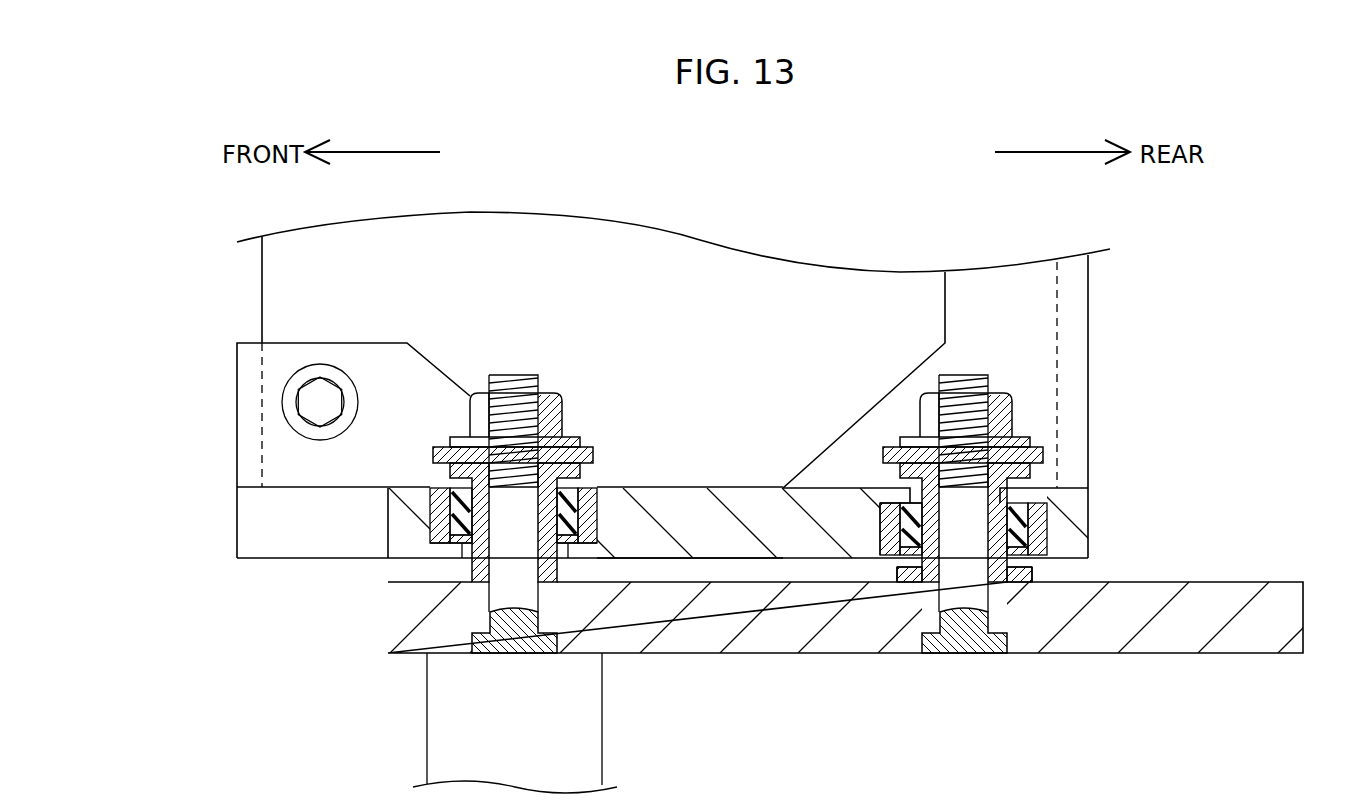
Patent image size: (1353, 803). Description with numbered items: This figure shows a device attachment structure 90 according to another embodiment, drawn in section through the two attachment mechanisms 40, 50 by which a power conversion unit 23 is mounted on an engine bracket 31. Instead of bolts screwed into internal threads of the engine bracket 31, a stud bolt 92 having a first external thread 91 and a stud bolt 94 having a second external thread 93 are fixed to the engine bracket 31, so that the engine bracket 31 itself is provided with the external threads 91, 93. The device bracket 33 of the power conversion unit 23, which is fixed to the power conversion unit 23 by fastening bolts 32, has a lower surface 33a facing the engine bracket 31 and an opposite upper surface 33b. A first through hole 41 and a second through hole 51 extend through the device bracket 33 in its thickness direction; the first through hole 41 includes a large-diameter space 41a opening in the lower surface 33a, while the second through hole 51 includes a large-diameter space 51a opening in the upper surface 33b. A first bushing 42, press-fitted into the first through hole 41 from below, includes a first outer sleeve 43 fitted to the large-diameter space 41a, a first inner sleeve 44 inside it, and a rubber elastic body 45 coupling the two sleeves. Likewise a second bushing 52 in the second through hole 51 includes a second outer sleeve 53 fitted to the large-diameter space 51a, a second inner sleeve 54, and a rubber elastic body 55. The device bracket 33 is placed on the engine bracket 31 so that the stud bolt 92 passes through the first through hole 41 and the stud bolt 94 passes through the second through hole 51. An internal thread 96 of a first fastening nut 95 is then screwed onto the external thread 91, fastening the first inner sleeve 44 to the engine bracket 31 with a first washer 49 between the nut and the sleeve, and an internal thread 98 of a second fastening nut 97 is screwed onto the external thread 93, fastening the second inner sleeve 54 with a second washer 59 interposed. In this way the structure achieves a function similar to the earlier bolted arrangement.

The power conversion unit 23 is at (684, 253).
The engine bracket 31 is at (385, 625).
The fastening bolt 32 is at (320, 395).
The device bracket 33 is at (490, 430).
The lower surface 33a is at (672, 560).
The upper surface 33b is at (686, 487).
The attachment mechanism 40 is at (966, 483).
The first through hole 41 is at (944, 600).
The large-diameter space 41a is at (880, 525).
The first bushing 42 is at (1016, 521).
The first outer sleeve 43 is at (1042, 525).
The first inner sleeve 44 is at (1015, 478).
The elastic body 45 is at (1047, 540).
The first washer 49 is at (888, 455).
The attachment mechanism 50 is at (520, 523).
The second through hole 51 is at (629, 481).
The large-diameter space 51a is at (595, 520).
The second bushing 52 is at (401, 505).
The second outer sleeve 53 is at (440, 512).
The second inner sleeve 54 is at (470, 475).
The elastic body 55 is at (455, 530).
The second washer 59 is at (437, 455).
The device attachment structure 90 is at (1029, 523).
The external thread 91 is at (980, 385).
The stud bolt 92 is at (988, 656).
The external thread 93 is at (529, 386).
The stud bolt 94 is at (537, 656).
The first fastening nut 95 is at (927, 403).
The internal thread 96 is at (988, 402).
The second fastening nut 97 is at (477, 402).
The internal thread 98 is at (535, 402).